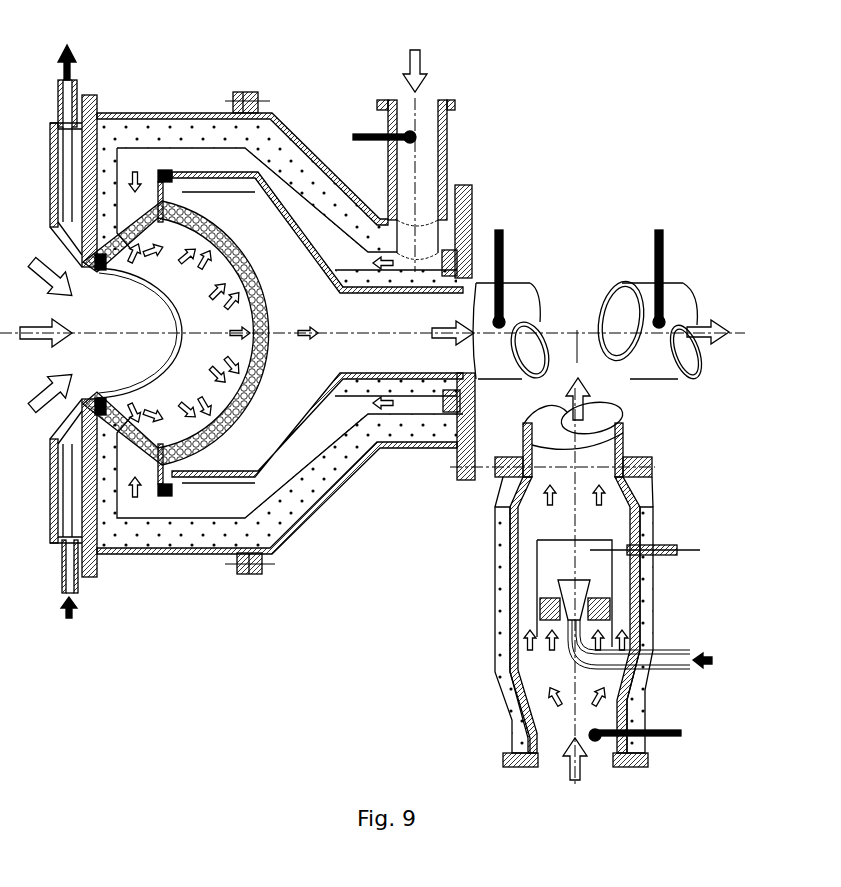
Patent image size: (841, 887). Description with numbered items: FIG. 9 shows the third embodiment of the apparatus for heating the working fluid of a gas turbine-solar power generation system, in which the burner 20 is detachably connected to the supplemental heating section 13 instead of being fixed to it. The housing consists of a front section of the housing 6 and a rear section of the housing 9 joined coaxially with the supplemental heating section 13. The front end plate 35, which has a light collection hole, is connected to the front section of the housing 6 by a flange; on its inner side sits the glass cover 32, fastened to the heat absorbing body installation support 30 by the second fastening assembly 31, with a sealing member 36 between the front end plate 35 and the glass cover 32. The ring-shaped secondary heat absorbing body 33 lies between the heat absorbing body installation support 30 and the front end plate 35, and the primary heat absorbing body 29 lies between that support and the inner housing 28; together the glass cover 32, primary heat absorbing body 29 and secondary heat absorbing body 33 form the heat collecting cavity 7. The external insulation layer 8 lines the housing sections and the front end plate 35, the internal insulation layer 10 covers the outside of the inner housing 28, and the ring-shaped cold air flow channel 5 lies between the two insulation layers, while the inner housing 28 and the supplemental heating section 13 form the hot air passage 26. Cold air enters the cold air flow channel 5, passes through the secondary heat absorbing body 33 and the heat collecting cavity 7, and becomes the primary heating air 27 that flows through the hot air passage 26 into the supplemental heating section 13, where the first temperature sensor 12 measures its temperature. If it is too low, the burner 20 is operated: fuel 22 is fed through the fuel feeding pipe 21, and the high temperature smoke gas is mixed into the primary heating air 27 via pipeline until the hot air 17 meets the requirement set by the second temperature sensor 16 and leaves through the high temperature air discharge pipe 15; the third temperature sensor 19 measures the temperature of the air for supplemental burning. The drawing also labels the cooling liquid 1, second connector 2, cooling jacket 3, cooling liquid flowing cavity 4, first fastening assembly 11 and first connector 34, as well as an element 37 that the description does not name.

The cooling liquid 1 is at (67, 45).
The second connector 2 is at (77, 100).
The cooling jacket 3 is at (95, 140).
The cooling liquid flowing cavity 4 is at (155, 162).
The cold air flow channel 5 is at (245, 92).
The front section of the housing 6 is at (182, 287).
The heat collecting cavity 7 is at (260, 118).
The external insulation layer 8 is at (330, 163).
The rear section of the housing 9 is at (372, 112).
The internal insulation layer 10 is at (345, 480).
The first fastening assembly 11 is at (442, 248).
The first temperature sensor 12 is at (499, 230).
The supplemental heating section 13 is at (472, 240).
The high temperature air discharge pipe 15 is at (633, 278).
The second temperature sensor 16 is at (660, 230).
The hot air 17 is at (732, 320).
The third temperature sensor 19 is at (683, 735).
The burner 20 is at (513, 613).
The fuel feeding pipe 21 is at (688, 650).
The fuel 22 is at (714, 659).
The hot air passage 26 is at (318, 420).
The primary heating air 27 is at (292, 418).
The inner housing 28 is at (270, 498).
The primary heat absorbing body 29 is at (232, 478).
The heat absorbing body installation support 30 is at (185, 478).
The second fastening assembly 31 is at (172, 493).
The glass cover 32 is at (160, 498).
The secondary heat absorbing body 33 is at (125, 555).
The first connector 34 is at (63, 572).
The front end plate 35 is at (78, 493).
The sealing member 36 is at (80, 452).
The inlet flow arrows 37 is at (52, 405).